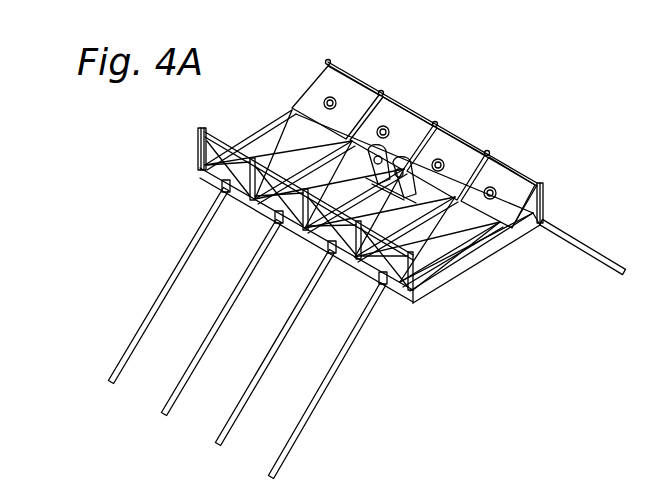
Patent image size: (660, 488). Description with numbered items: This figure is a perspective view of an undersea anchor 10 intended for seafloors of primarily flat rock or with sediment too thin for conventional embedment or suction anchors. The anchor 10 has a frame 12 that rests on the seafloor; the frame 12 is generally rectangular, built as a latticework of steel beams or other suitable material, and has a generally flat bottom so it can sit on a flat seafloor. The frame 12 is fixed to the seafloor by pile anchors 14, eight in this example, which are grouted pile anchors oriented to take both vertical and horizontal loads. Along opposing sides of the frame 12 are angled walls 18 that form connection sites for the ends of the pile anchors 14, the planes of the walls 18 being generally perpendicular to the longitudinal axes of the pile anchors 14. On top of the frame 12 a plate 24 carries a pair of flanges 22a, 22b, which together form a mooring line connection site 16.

The undersea anchor 10 is at (560, 128).
The frame 12 is at (493, 262).
The pile anchors 14 is at (322, 393).
The mooring line connection site 16 is at (398, 128).
The angled walls 18 is at (313, 92).
The flange 22a is at (376, 148).
The flange 22b is at (405, 158).
The plate 24 is at (437, 183).